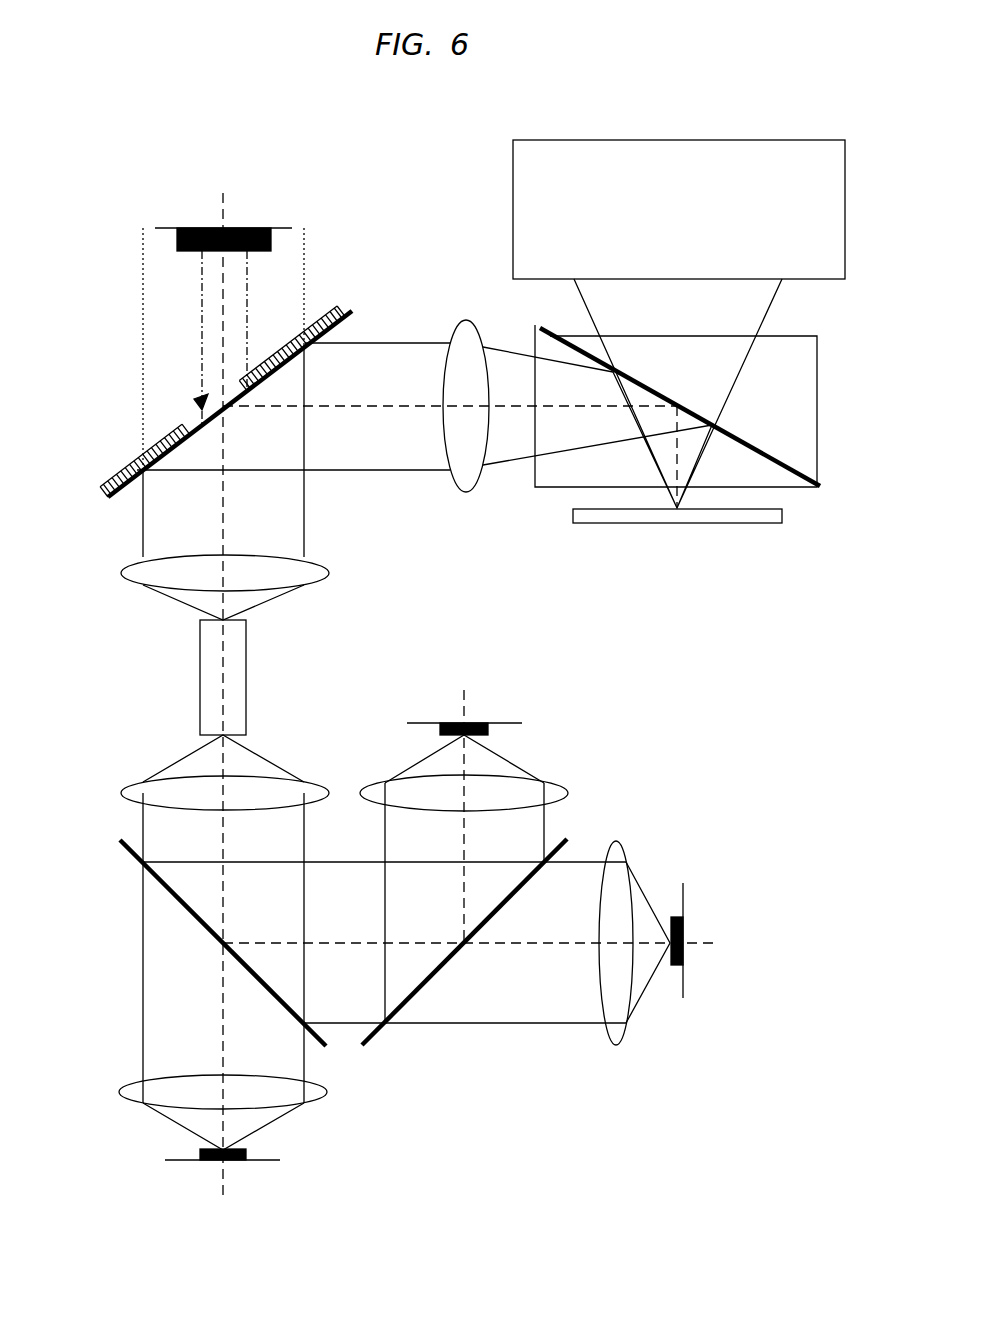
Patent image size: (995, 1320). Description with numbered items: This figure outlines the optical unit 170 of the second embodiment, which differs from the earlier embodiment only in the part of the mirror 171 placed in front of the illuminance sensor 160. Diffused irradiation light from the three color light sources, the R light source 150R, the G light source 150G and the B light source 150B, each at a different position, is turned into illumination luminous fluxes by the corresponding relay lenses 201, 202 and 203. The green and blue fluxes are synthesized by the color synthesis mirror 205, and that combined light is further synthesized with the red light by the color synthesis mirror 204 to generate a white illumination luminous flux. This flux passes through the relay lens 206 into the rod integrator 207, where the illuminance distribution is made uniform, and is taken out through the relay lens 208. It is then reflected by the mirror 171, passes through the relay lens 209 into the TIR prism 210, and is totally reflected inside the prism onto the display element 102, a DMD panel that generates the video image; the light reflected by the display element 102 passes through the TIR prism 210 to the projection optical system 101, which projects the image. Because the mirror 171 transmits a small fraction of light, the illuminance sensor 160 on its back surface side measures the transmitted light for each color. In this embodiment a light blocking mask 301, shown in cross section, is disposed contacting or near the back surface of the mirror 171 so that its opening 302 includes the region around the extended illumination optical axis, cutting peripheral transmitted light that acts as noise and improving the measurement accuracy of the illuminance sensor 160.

The projection optical system 101 is at (513, 207).
The display element 102 is at (747, 524).
The R light source 150R is at (240, 1163).
The G light source 150G is at (686, 930).
The B light source 150B is at (480, 720).
The illuminance sensor 160 is at (250, 227).
The optical unit 170 is at (541, 1155).
The mirror 171 is at (352, 311).
The relay lens 201 is at (121, 1082).
The relay lens 202 is at (620, 1045).
The relay lens 203 is at (568, 788).
The color synthesis mirror 204 is at (135, 862).
The color synthesis mirror 205 is at (372, 1047).
The relay lens 206 is at (123, 786).
The rod integrator 207 is at (200, 680).
The relay lens 208 is at (126, 562).
The relay lens 209 is at (466, 492).
The TIR prism 210 is at (805, 489).
The light blocking mask 301 is at (336, 297).
The opening 302 is at (200, 396).